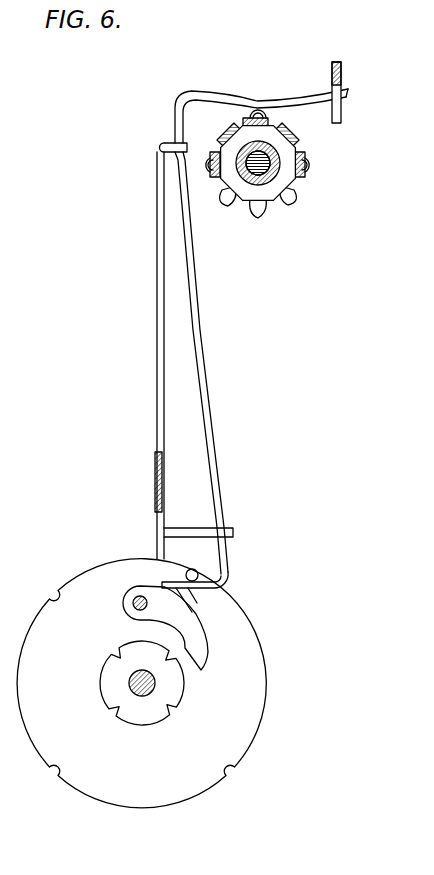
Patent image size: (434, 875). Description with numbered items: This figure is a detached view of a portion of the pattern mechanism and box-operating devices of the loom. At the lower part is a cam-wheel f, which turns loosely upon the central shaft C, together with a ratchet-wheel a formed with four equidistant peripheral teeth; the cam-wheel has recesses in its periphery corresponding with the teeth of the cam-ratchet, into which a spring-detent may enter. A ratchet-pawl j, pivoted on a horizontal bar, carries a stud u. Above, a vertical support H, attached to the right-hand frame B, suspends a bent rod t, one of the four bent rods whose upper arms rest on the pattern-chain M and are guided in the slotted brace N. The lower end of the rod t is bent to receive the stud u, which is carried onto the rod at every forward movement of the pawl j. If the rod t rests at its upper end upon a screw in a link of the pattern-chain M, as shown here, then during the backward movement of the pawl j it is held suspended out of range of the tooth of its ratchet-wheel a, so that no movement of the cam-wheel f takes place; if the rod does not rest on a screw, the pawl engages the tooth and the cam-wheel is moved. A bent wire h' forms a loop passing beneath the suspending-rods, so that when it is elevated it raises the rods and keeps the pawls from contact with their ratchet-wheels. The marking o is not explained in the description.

The cam-wheel f is at (187, 746).
The shaft C is at (156, 686).
The ratchet-wheel a is at (142, 671).
The ratchet-pawl j is at (165, 628).
The stud u is at (196, 564).
The vertical support H is at (185, 351).
The bent rod t is at (255, 338).
The frame B is at (153, 479).
The slotted brace N is at (339, 76).
The pattern-chain M is at (278, 162).
The cap o is at (268, 113).
The bent wire h' is at (272, 117).